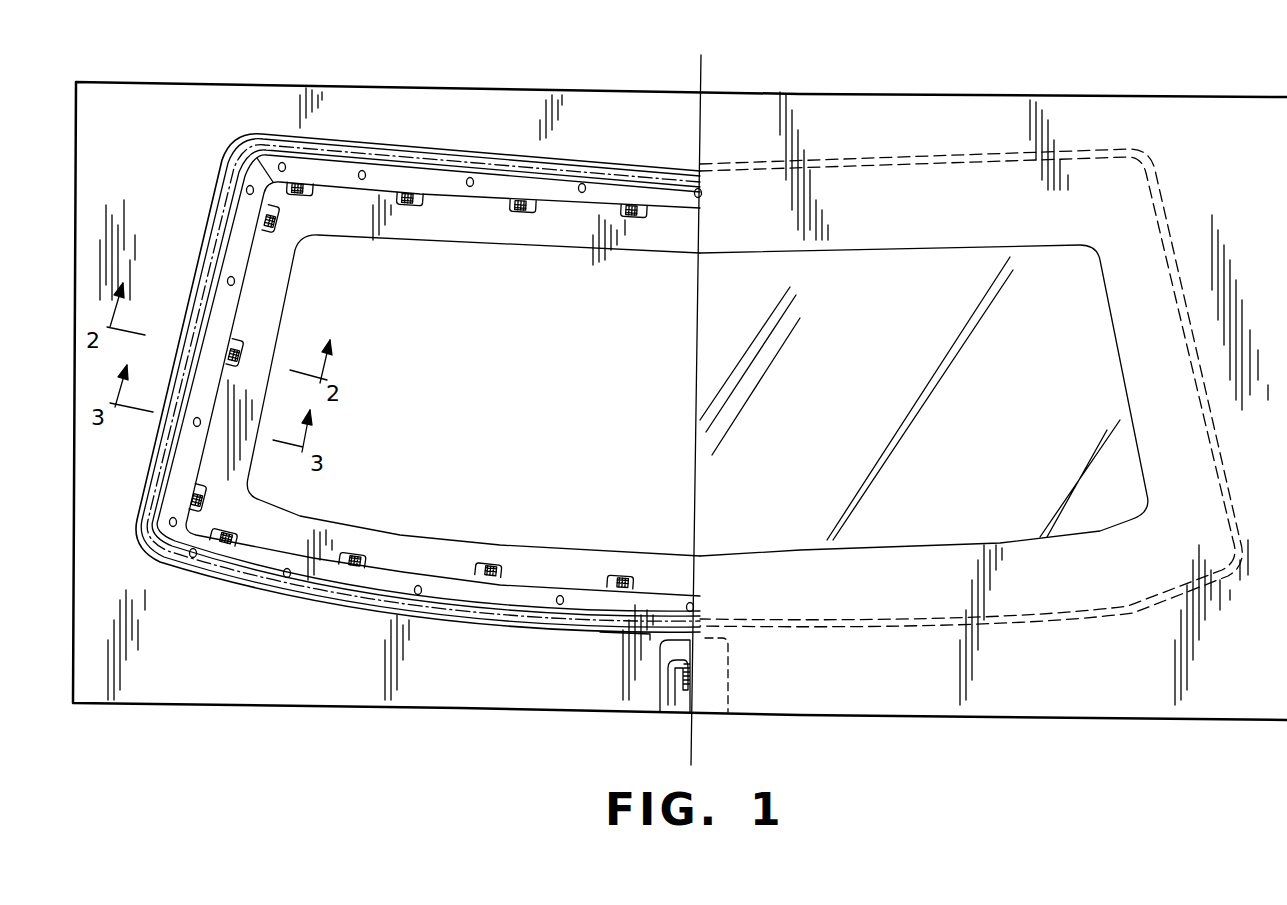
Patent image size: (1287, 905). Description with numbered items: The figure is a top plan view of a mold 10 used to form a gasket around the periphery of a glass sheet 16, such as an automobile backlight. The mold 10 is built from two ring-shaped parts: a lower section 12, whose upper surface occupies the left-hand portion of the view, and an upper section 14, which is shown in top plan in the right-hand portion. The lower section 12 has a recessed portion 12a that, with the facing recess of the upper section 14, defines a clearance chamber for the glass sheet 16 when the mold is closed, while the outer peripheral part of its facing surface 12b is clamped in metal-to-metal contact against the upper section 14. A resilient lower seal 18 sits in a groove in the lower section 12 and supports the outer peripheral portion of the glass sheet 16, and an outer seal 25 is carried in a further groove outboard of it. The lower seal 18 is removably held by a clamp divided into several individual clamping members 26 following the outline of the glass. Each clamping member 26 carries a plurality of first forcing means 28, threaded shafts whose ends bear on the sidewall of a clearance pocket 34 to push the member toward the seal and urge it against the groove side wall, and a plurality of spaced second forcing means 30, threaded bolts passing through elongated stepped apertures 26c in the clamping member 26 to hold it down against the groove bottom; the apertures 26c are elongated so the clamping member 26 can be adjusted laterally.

The mold 10 is at (843, 58).
The lower section 12 is at (650, 105).
The recessed portion 12a is at (550, 240).
The facing surface 12b is at (152, 178).
The upper section 14 is at (968, 106).
The glass sheet 16 is at (884, 361).
The lower seal 18 is at (236, 205).
The outer seal 25 is at (362, 143).
The clamping member 26 is at (508, 197).
The elongated stepped aperture 26c is at (471, 178).
The first forcing means 28 is at (410, 202).
The second forcing means 30 is at (583, 185).
The clearance pocket 34 is at (235, 345).